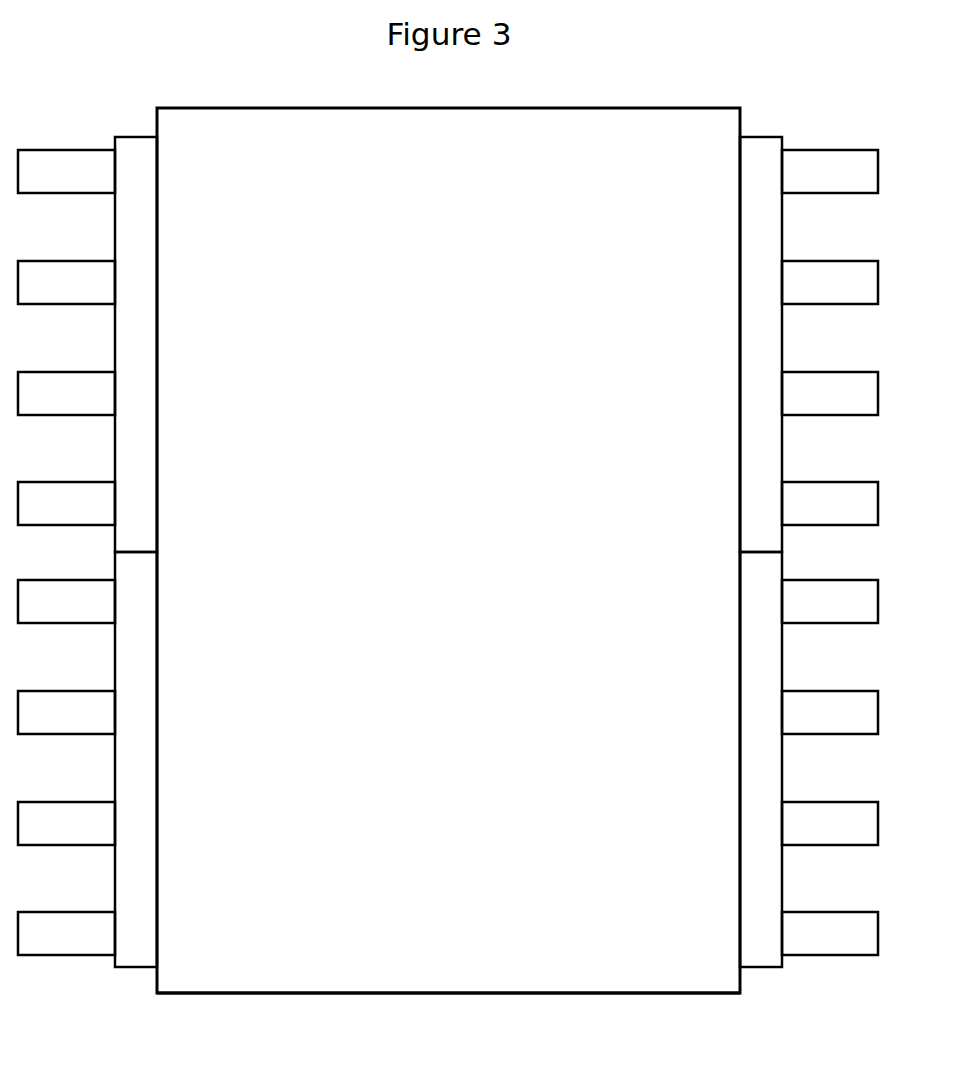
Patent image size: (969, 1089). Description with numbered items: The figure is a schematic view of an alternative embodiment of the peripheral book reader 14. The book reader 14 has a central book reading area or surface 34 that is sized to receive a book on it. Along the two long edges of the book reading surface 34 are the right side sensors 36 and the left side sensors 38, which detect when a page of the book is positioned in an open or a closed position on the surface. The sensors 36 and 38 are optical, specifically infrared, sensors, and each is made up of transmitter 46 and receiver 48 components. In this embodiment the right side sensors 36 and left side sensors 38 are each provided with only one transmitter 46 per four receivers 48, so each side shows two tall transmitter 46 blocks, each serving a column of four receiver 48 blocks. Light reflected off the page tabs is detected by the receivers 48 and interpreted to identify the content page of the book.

The peripheral book reader 14 is at (407, 995).
The book reading area or surface 34 is at (615, 178).
The right side sensors 36 is at (839, 510).
The left side sensors 38 is at (95, 95).
The transmitter 46 is at (783, 205).
The receiver 48 is at (879, 176).